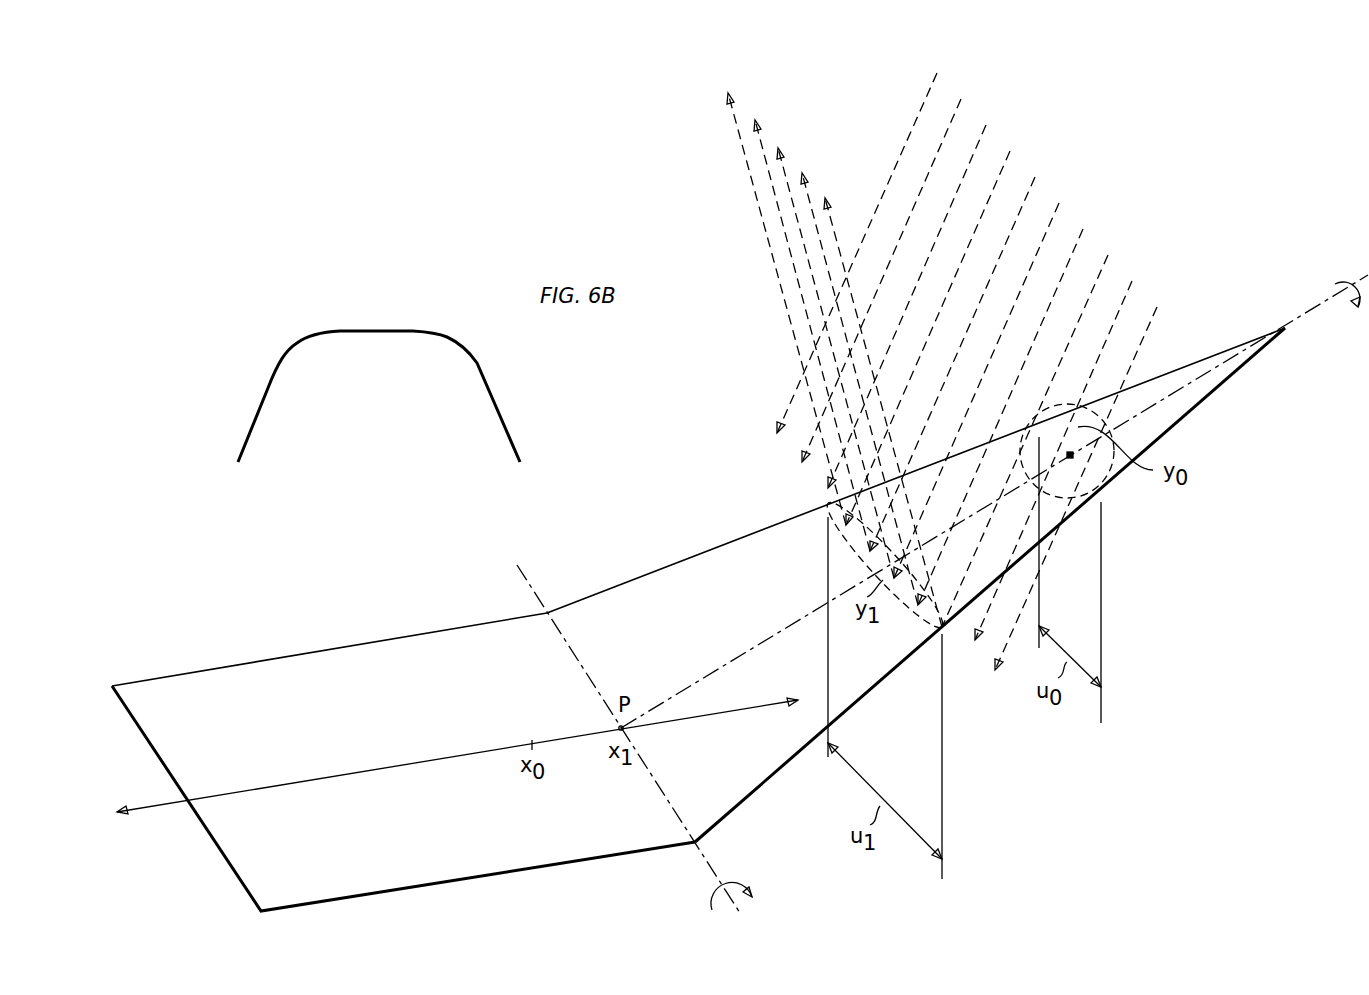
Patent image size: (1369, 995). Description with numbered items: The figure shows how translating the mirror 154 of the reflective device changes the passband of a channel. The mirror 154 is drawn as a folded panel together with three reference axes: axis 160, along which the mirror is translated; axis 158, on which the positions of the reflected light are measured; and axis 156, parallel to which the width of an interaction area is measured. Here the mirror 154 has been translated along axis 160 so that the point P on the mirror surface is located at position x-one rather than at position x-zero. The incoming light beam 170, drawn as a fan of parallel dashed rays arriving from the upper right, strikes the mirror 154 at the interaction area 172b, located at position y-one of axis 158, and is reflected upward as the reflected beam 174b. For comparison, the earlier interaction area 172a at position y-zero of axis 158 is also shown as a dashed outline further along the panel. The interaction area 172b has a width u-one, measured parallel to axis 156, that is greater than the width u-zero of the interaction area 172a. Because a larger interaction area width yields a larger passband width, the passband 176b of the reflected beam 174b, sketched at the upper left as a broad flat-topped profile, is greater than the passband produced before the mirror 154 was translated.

The mirror 154 is at (746, 536).
The axis 156 is at (528, 582).
The axis 158 is at (1308, 312).
The axis 160 is at (156, 812).
The light beam 170 is at (905, 148).
The interaction area 172a is at (1110, 493).
The interaction area 172b is at (920, 608).
The reflected beam 174b is at (742, 143).
The passband 176b is at (260, 408).